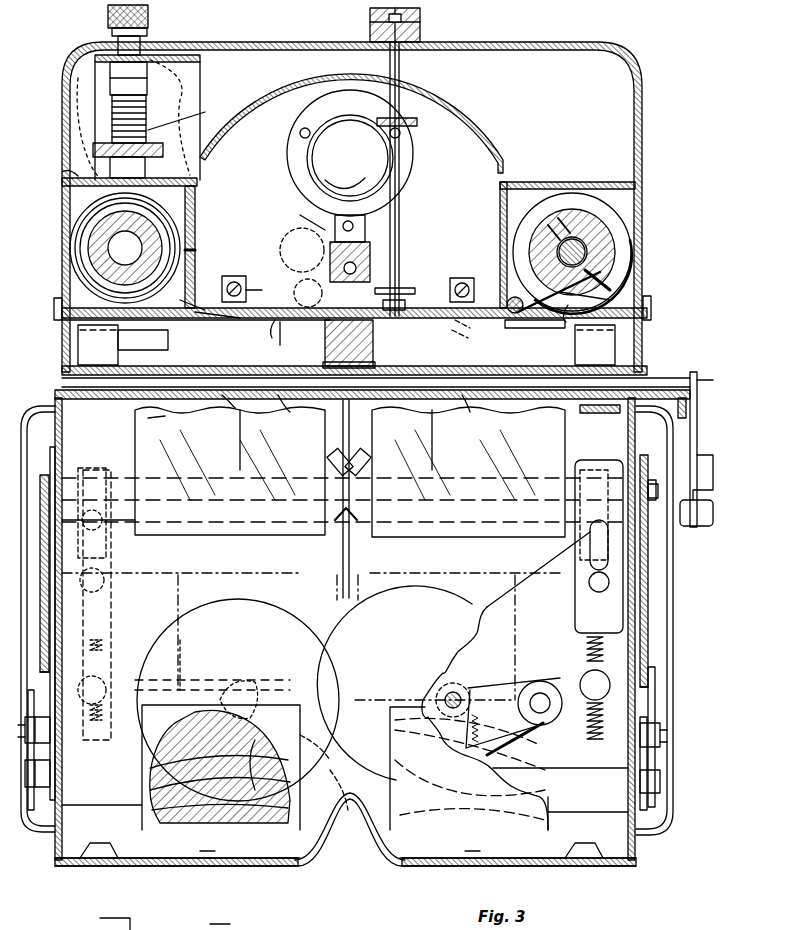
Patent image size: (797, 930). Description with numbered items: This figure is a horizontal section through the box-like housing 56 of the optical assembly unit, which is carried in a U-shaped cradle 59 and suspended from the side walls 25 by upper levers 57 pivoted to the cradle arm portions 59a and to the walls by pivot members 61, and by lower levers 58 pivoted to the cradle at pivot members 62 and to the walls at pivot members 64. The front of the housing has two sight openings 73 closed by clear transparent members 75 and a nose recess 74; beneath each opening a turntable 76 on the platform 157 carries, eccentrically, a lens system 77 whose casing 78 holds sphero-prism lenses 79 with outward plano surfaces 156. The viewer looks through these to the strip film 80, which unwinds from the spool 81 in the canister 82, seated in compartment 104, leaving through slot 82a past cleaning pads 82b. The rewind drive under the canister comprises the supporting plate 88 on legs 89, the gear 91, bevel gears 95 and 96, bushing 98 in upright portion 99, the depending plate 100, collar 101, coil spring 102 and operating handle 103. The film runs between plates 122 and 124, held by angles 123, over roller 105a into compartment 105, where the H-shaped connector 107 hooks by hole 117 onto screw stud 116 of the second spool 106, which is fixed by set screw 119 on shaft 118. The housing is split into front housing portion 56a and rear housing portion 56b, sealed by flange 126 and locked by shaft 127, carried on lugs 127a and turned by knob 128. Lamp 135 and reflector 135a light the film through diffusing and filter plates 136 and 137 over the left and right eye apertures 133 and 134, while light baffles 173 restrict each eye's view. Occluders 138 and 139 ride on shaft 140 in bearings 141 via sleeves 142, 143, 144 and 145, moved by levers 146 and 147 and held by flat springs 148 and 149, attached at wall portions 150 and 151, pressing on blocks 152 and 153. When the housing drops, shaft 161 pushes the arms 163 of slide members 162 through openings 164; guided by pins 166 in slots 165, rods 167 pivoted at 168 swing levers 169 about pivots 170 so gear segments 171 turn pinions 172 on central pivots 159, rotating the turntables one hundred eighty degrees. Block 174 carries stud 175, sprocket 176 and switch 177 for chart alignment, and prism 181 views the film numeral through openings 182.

The side walls 25 is at (25, 700).
The housing 56 is at (636, 852).
The front housing portion 56a is at (636, 870).
The rear housing portion 56b is at (643, 95).
The upper levers 57 is at (45, 612).
The lower levers 58 is at (46, 540).
The cradle 59 is at (655, 680).
The arm portions 59a is at (55, 632).
The pivot members 61 is at (50, 730).
The pivot members 62 is at (656, 535).
The pivot members 64 is at (50, 775).
The sight openings 73 is at (240, 867).
The recess 74 is at (332, 832).
The clear transparent members 75 is at (205, 860).
The turntable 76 is at (296, 626).
The lens system 77 is at (138, 803).
The casing 78 is at (351, 790).
The sphero-prism lenses 79 is at (300, 735).
The strip film 80 is at (170, 270).
The spool 81 is at (150, 248).
The canister 82 is at (195, 200).
The slot 82a is at (200, 330).
The pads or brushes 82b is at (235, 276).
The supporting plate 88 is at (195, 95).
The legs 89 is at (92, 62).
The gear 91 is at (200, 142).
The bevelled gear 95 is at (186, 116).
The bevel gear 96 is at (166, 140).
The bushing 98 is at (148, 66).
The upright portion 99 is at (185, 55).
The plate 100 is at (62, 180).
The collar 101 is at (165, 80).
The coil spring 102 is at (160, 112).
The operating handle 103 is at (150, 14).
The compartment 104 is at (195, 240).
The compartment 105 is at (567, 183).
The roller 105a is at (520, 320).
The second spool 106 is at (612, 243).
The H-shaped connector 107 is at (566, 325).
The screw stud 116 is at (608, 275).
The hole 117 is at (610, 300).
The shaft 118 is at (585, 248).
The set screw 119 is at (575, 240).
The plate 122 is at (240, 330).
The angles 123 is at (248, 276).
The second plate 124 is at (218, 325).
The flange 126 is at (54, 310).
The shaft 127 is at (400, 212).
The lugs 127a is at (417, 122).
The knob 128 is at (420, 20).
The left eye apertures 133 is at (284, 332).
The right eye apertures 134 is at (454, 335).
The lamp 135 is at (325, 162).
The reflector 135a is at (470, 116).
The diffusing and filter plate 136 is at (260, 287).
The diffusing and filter plate 137 is at (435, 310).
The left eye occluder 138 is at (212, 540).
The right eye occluder 139 is at (430, 540).
The shaft 140 is at (271, 413).
The bearings 141 is at (62, 372).
The sleeve 142 is at (226, 432).
The sleeve 143 is at (427, 440).
The sleeve 144 is at (270, 355).
The sleeve 145 is at (469, 413).
The operating lever 146 is at (712, 512).
The operating lever 147 is at (697, 445).
The flat spring 148 is at (78, 340).
The flat spring 149 is at (612, 345).
The rear wall portion 150 is at (125, 330).
The rear wall portion 151 is at (512, 330).
The square-sided block 152 is at (168, 415).
The square-sided block 153 is at (580, 408).
The plano surfaces 156 is at (225, 832).
The platform 157 is at (556, 808).
The central pivot 159 is at (460, 680).
The shaft 161 is at (658, 490).
The slide members 162 is at (120, 612).
The arm 163 is at (100, 468).
The openings / recess 164 is at (105, 520).
The longitudinal slots 165 is at (590, 560).
The fixed pin 166 is at (590, 590).
The rods 167 is at (604, 660).
The pivotal connection 168 is at (604, 722).
The levers 169 is at (595, 670).
The pivot 170 is at (545, 705).
The gear segments 171 is at (512, 740).
The pinions 172 is at (341, 718).
The light baffles 173 is at (343, 520).
The block 174 is at (340, 235).
The headed stud 175 is at (342, 285).
The sprocket 176 is at (283, 252).
The switch 177 is at (298, 214).
The prism 181 is at (375, 352).
The openings 182 is at (299, 293).